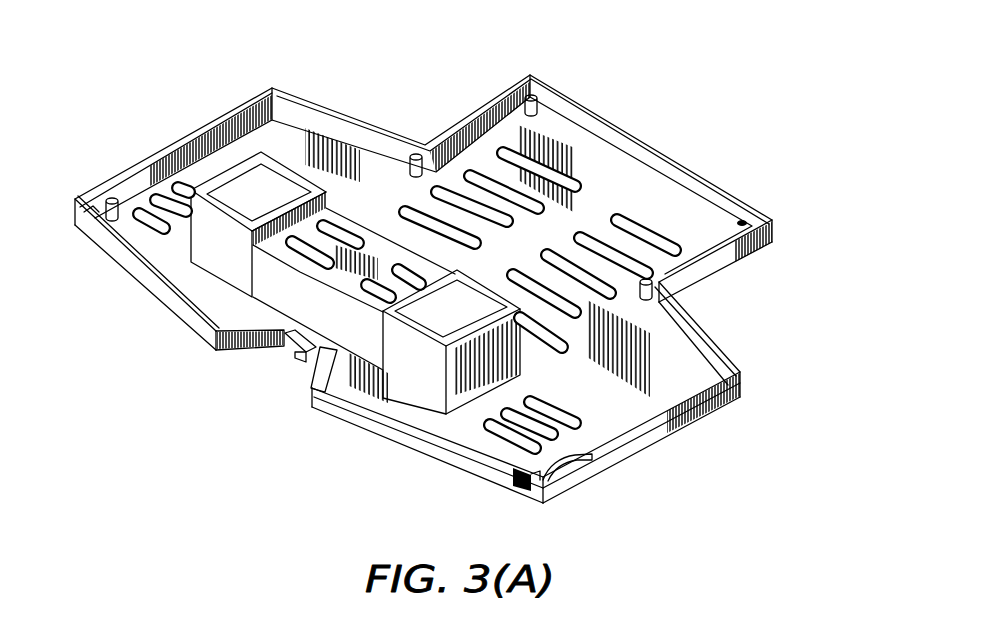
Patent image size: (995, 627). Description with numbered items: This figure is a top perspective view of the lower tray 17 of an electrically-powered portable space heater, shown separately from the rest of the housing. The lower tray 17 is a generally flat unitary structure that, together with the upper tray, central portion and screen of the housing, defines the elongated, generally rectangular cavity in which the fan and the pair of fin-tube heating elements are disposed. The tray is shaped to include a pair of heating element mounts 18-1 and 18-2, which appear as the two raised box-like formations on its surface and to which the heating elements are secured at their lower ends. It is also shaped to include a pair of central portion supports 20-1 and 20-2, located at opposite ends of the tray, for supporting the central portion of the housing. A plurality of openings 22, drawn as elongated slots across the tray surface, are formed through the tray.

The lower tray 17 is at (662, 121).
The heating element mount 18-1 is at (213, 237).
The heating element mount 18-2 is at (420, 368).
The central portion support 20-1 is at (118, 223).
The central portion support 20-2 is at (590, 457).
The openings 22 is at (450, 187).